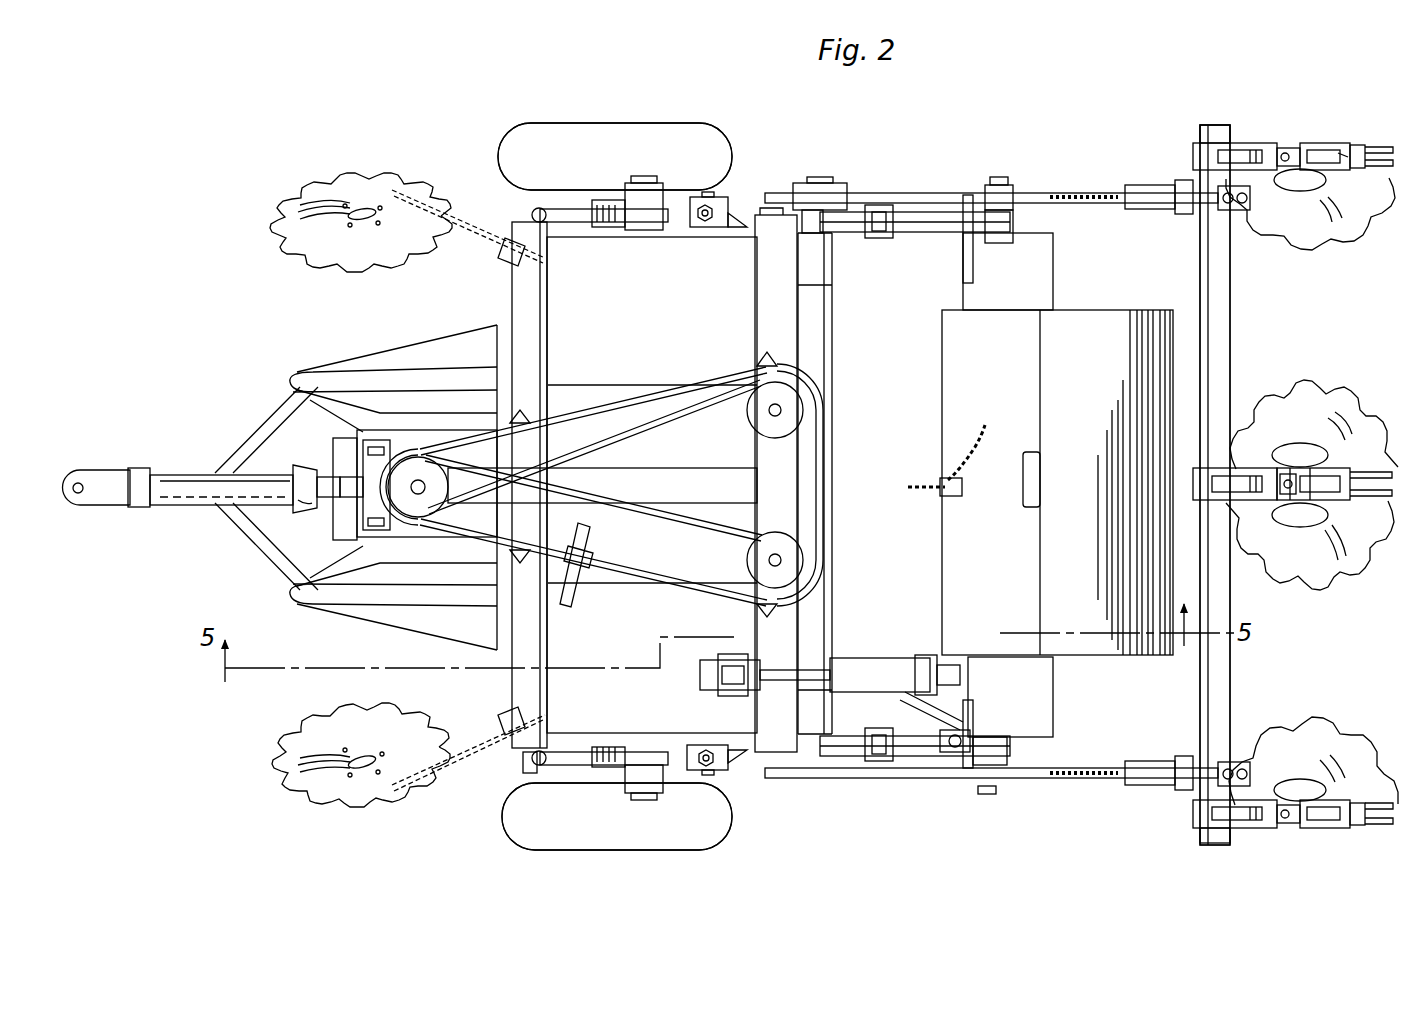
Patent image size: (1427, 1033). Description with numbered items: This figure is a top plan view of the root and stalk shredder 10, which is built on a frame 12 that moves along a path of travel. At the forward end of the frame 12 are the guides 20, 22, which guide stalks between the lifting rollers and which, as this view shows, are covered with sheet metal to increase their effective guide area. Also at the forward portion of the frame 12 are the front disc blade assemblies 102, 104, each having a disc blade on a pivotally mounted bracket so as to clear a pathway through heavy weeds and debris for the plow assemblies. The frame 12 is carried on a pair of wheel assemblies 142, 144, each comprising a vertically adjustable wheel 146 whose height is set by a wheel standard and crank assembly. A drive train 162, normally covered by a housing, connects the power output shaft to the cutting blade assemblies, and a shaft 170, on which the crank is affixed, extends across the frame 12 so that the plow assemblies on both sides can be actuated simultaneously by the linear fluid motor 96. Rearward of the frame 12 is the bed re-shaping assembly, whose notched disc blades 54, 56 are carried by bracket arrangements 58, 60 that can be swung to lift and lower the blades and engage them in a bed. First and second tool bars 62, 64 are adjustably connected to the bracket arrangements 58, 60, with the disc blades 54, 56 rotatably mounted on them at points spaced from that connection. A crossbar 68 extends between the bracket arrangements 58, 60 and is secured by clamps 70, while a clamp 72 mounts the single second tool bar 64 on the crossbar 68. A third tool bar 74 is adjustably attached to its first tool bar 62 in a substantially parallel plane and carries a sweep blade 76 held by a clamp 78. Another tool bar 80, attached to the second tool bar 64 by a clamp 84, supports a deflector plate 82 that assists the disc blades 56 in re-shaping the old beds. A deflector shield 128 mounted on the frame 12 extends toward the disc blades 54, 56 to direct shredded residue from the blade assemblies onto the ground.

The root and stalk shredder 10 is at (804, 176).
The frame 12 is at (745, 784).
The guide 20 is at (377, 352).
The guide 22 is at (364, 618).
The notched disc blade 54 is at (1338, 222).
The notched disc blade 56 is at (1368, 410).
The bracket arrangement 58 is at (1043, 188).
The bracket arrangement 60 is at (1060, 785).
The first tool bar 62 is at (1257, 152).
The second tool bar 64 is at (1256, 492).
The crossbar 68 is at (1220, 688).
The clamp 70 is at (1238, 142).
The clamp 72 is at (1226, 504).
The third tool bar 74 is at (1380, 148).
The sweep blade 76 is at (1330, 156).
The clamp 78 is at (1327, 142).
The tool bar 80 is at (1328, 496).
The deflector plate 82 is at (1378, 488).
The clamp 84 is at (1306, 468).
The linear fluid motor 96 is at (893, 664).
The front disc blade assembly 102 is at (312, 246).
The front disc blade assembly 104 is at (278, 757).
The deflector shield 128 is at (1072, 330).
The wheel assembly 142 is at (604, 155).
The wheel assembly 144 is at (650, 825).
The wheel 146 is at (708, 147).
The drive train 162 is at (586, 410).
The shaft 170 is at (820, 331).